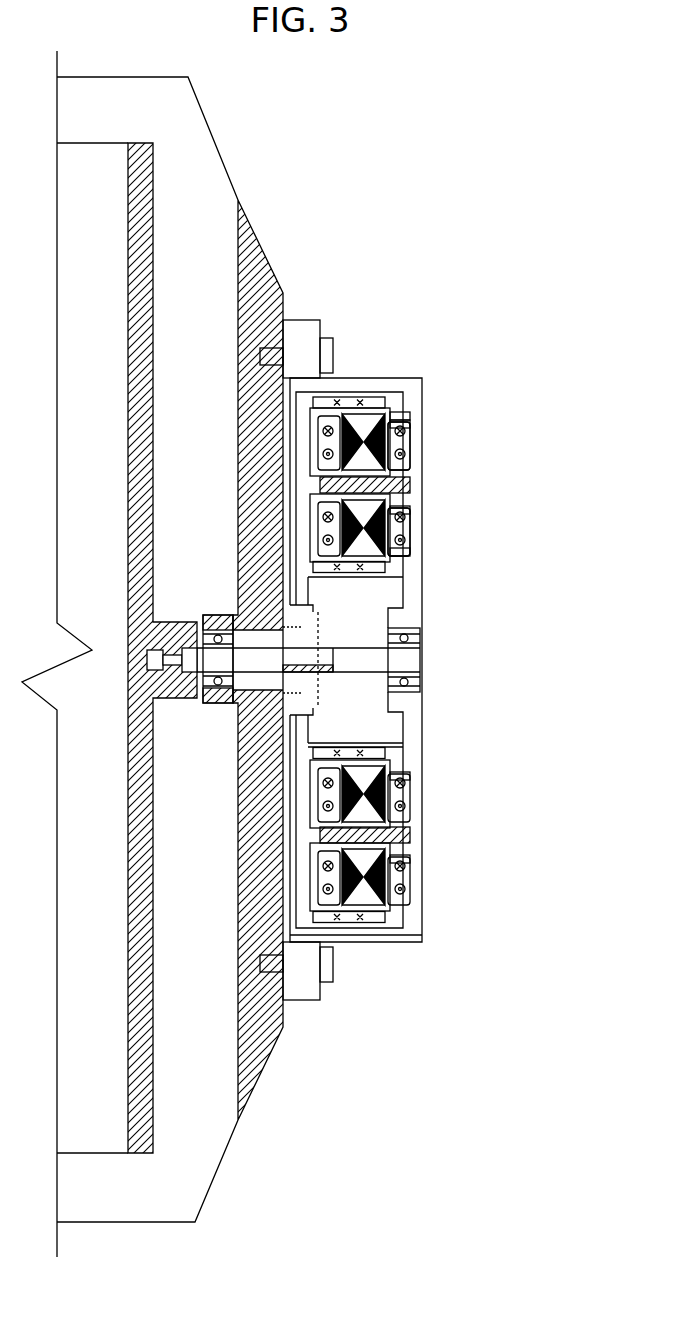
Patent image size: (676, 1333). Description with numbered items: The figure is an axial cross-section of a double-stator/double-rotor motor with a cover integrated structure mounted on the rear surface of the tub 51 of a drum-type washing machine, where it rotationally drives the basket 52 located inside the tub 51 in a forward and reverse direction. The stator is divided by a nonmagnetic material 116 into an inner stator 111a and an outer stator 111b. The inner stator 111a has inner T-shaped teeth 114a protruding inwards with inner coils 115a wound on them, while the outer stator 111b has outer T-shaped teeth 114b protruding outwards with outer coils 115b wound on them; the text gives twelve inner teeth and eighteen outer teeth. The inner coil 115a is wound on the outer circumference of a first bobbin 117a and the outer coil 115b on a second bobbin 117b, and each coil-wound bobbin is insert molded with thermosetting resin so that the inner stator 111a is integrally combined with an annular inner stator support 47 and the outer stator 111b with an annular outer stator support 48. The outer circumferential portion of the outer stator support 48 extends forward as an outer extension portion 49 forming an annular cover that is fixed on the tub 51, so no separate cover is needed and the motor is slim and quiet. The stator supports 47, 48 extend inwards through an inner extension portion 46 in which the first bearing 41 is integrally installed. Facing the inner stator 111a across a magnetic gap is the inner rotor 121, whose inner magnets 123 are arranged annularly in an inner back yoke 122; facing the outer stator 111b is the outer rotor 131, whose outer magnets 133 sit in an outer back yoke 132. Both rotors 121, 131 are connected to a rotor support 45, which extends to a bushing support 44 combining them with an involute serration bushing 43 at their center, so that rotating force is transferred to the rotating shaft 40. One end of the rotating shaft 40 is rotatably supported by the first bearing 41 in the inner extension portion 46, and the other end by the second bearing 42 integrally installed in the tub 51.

The rotating shaft 40 is at (147, 658).
The first bearing 41 is at (420, 682).
The second bearing 42 is at (235, 669).
The involute serration bushing 43 is at (330, 680).
The bushing support 44 is at (300, 703).
The rotor support 45 is at (305, 633).
The inner extension portion 46 is at (403, 578).
The inner stator support 47 is at (422, 515).
The outer stator support 48 is at (422, 443).
The outer extension portion 49 is at (303, 319).
The tub 51 is at (260, 1072).
The basket 52 is at (153, 1090).
The inner stator 111a is at (442, 540).
The outer stator 111b is at (443, 430).
The inner teeth 114a is at (367, 550).
The outer teeth 114b is at (380, 418).
The inner coil 115a is at (402, 533).
The outer coil 115b is at (407, 430).
The first bobbin 117a is at (398, 552).
The second bobbin 117b is at (398, 419).
The nonmagnetic material 116 is at (408, 833).
The inner rotor 121 is at (424, 744).
The inner back yoke 122 is at (365, 735).
The inner magnets 123 is at (375, 753).
The outer rotor 131 is at (414, 927).
The outer back yoke 132 is at (380, 942).
The outer magnets 133 is at (390, 922).